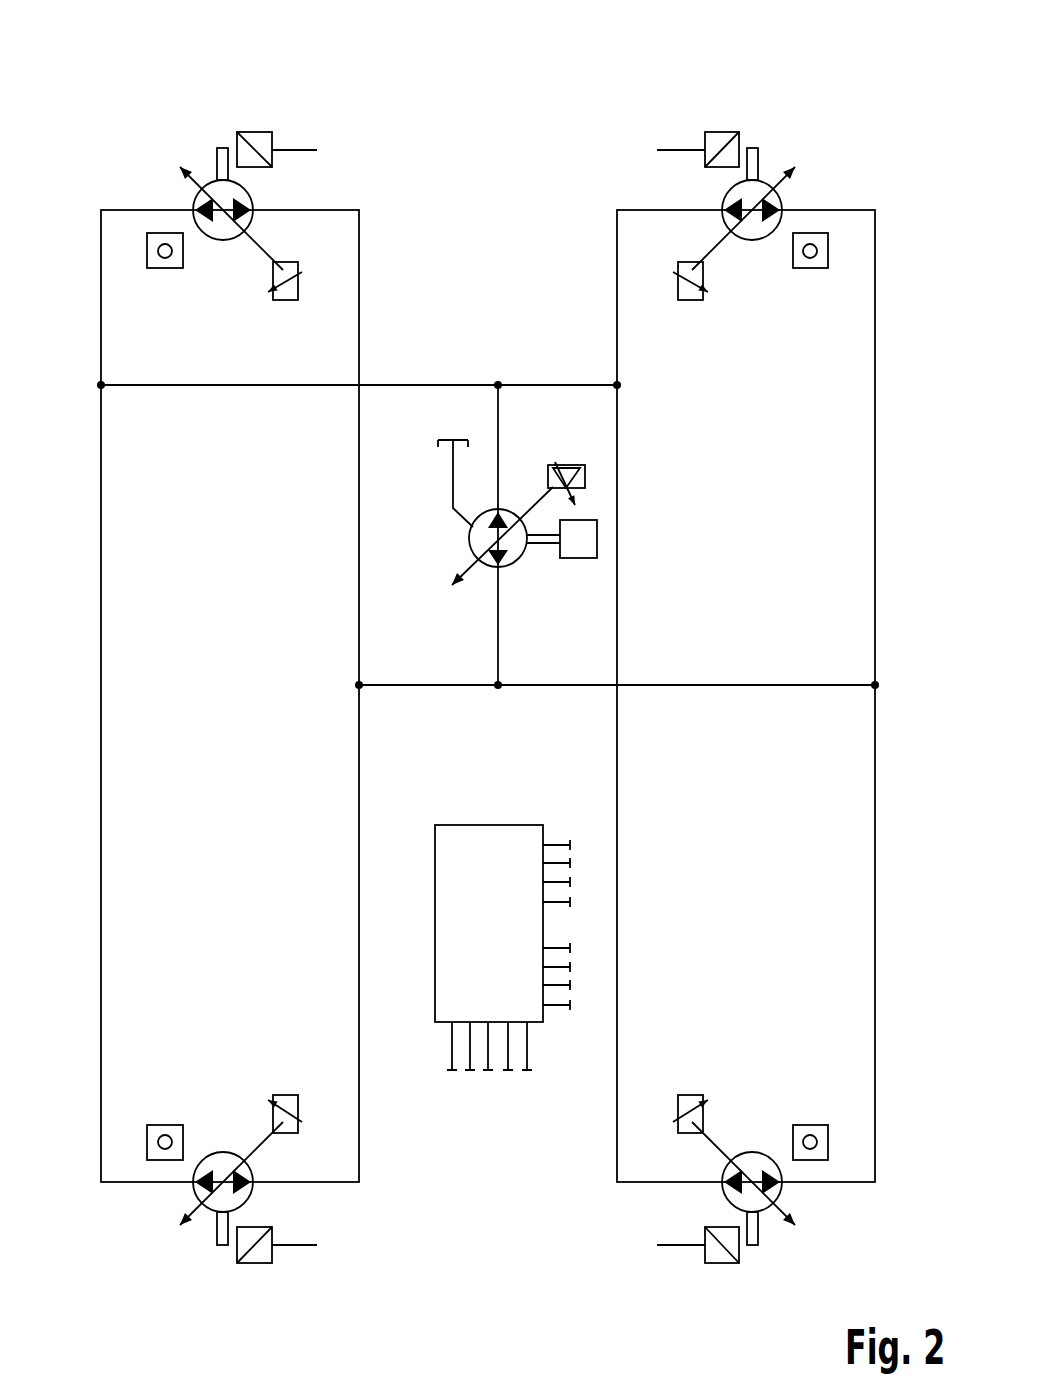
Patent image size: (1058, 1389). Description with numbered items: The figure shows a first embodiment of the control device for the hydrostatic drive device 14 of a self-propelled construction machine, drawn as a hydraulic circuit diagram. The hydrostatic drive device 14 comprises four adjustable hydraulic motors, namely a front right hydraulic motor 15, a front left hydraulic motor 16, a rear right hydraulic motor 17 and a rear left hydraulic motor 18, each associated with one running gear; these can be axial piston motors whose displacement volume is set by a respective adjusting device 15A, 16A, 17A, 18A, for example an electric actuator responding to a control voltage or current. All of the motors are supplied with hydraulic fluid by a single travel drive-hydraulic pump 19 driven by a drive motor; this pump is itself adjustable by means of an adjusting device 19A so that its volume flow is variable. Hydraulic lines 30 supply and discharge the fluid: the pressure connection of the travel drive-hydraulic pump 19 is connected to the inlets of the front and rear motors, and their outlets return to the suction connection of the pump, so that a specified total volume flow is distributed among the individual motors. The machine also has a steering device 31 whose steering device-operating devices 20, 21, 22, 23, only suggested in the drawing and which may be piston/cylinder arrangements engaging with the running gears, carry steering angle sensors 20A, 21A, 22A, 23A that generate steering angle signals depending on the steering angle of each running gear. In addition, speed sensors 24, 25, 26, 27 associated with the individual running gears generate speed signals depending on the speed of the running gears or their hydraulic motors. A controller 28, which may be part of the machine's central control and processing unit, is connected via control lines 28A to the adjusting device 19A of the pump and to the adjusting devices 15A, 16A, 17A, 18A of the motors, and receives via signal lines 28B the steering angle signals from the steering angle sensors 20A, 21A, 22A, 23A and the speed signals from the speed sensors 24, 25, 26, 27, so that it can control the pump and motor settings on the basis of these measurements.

The hydrostatic drive device 14 is at (468, 88).
The front right hydraulic motor 15 is at (789, 212).
The adjusting device 15A is at (690, 262).
The front left hydraulic motor 16 is at (186, 213).
The adjusting device 16A is at (285, 262).
The rear right hydraulic motor 17 is at (788, 1184).
The adjusting device 17A is at (688, 1133).
The rear left hydraulic motor 18 is at (186, 1184).
The adjusting device 18A is at (288, 1133).
The travel drive-hydraulic pump 19 is at (567, 556).
The adjusting device 19A is at (587, 476).
The steering device-operating device 20 is at (810, 233).
The steering angle sensor 20A is at (818, 251).
The steering device-operating device 21 is at (165, 233).
The steering angle sensor 21A is at (158, 251).
The steering device-operating device 22 is at (810, 1160).
The steering angle sensor 22A is at (818, 1142).
The steering device-operating device 23 is at (165, 1160).
The steering angle sensor 23A is at (158, 1142).
The speed sensor 24 is at (723, 132).
The speed sensor 25 is at (256, 132).
The speed sensor 26 is at (723, 1264).
The speed sensor 27 is at (258, 1264).
The controller 28 is at (516, 949).
The control lines 28A is at (452, 1042).
The signal lines 28B is at (556, 840).
The hydraulic lines 30 is at (343, 561).
The steering device 31 is at (843, 138).